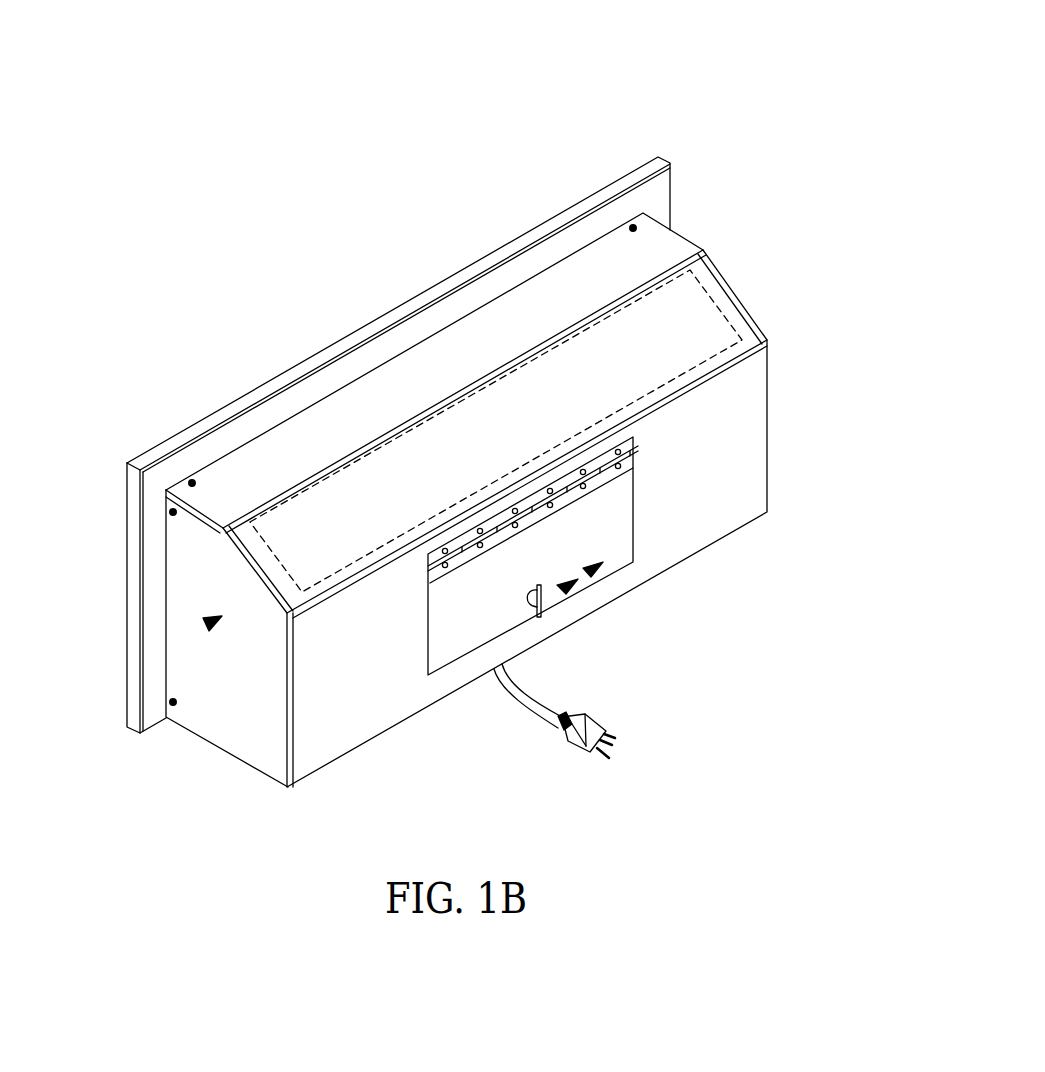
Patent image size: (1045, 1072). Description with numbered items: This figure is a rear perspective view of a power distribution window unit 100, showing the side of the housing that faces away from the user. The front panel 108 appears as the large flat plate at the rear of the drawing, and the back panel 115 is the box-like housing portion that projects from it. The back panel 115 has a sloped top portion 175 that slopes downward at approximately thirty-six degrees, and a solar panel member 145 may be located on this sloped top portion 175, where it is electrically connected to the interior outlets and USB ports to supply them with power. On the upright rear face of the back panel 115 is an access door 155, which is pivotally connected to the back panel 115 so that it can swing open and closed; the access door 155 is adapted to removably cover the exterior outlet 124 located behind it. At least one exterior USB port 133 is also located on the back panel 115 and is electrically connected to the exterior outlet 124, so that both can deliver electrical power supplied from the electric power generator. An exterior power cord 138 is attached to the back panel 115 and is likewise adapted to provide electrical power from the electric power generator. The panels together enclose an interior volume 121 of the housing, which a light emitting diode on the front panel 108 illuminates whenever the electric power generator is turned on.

The power distribution window unit 100 is at (710, 54).
The front panel 108 is at (217, 417).
The back panel 115 is at (727, 487).
The interior volume 121 is at (207, 620).
The exterior outlet 124 is at (597, 572).
The exterior USB port 133 is at (585, 596).
The exterior power cord 138 is at (606, 731).
The solar panel member 145 is at (718, 342).
The access door 155 is at (610, 545).
The sloped top portion 175 is at (732, 292).